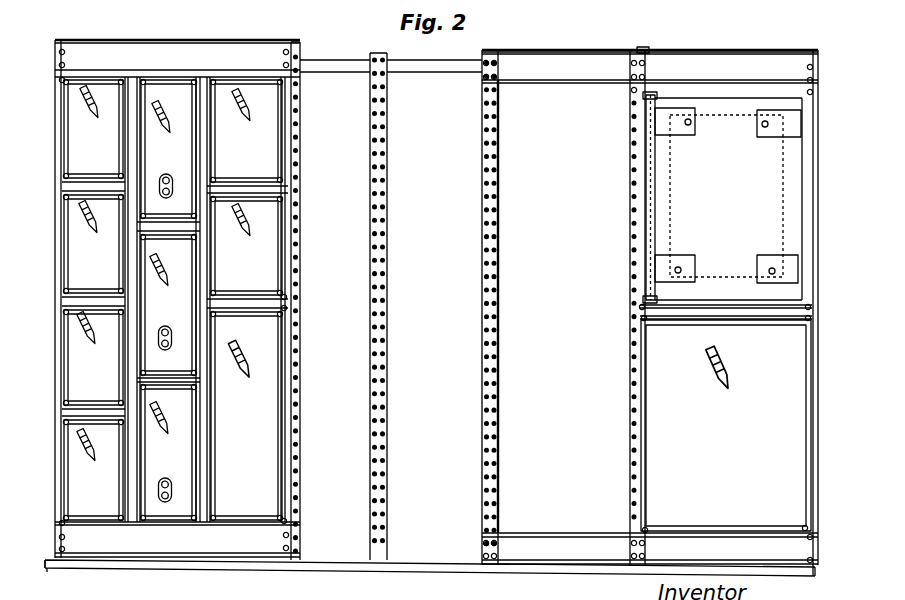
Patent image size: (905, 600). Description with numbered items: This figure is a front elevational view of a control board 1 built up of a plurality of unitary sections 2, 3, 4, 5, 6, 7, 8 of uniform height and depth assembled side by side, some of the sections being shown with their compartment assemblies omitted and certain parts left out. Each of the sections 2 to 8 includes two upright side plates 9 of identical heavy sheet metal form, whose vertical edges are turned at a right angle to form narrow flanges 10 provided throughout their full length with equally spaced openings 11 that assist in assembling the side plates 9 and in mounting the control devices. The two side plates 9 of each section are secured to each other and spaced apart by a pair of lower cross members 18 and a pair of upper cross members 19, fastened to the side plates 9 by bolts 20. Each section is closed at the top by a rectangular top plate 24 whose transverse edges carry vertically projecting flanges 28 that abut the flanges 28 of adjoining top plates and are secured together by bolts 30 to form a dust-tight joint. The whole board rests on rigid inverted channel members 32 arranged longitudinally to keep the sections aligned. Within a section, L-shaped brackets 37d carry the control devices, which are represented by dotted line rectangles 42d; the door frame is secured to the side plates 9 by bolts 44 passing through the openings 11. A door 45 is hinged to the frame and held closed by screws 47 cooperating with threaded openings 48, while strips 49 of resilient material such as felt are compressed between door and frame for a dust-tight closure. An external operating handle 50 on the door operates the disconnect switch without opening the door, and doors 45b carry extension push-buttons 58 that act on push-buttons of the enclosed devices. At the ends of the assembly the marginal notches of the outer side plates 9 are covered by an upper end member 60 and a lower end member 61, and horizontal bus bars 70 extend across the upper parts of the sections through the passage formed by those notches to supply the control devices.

The board 1 is at (515, 50).
The unitary section 2 is at (95, 264).
The unitary section 3 is at (168, 265).
The unitary section 4 is at (251, 42).
The unitary section 5 is at (333, 58).
The unitary section 6 is at (422, 60).
The unitary section 7 is at (569, 50).
The unitary section 8 is at (729, 50).
The side plate 9 is at (370, 143).
The flange 10 is at (370, 190).
The opening 11 is at (370, 250).
The lower cross member 18 is at (436, 543).
The upper cross member 19 is at (436, 60).
The bolt 20 is at (499, 76).
The top plate 24 is at (603, 50).
The flange 28 is at (294, 42).
The bolt 30 is at (648, 52).
The channel member 32 is at (340, 566).
The bracket 37d is at (757, 130).
The control device 42d is at (670, 182).
The bolt 44 is at (300, 294).
The door 45 is at (93, 244).
The door 45b is at (168, 442).
The screw 47 is at (645, 95).
The threaded opening 48 is at (801, 202).
The strip 49 is at (656, 218).
The operating handle 50 is at (89, 222).
The extension push-button 58 is at (159, 186).
The upper end member 60 is at (57, 40).
The lower end member 61 is at (51, 570).
The bus bar 70 is at (391, 286).